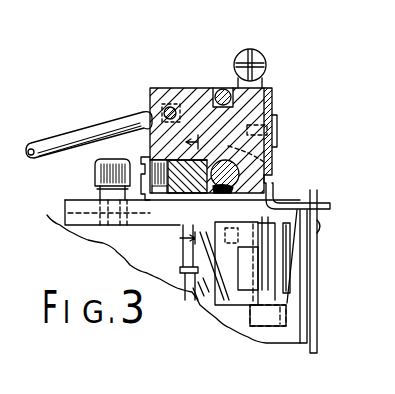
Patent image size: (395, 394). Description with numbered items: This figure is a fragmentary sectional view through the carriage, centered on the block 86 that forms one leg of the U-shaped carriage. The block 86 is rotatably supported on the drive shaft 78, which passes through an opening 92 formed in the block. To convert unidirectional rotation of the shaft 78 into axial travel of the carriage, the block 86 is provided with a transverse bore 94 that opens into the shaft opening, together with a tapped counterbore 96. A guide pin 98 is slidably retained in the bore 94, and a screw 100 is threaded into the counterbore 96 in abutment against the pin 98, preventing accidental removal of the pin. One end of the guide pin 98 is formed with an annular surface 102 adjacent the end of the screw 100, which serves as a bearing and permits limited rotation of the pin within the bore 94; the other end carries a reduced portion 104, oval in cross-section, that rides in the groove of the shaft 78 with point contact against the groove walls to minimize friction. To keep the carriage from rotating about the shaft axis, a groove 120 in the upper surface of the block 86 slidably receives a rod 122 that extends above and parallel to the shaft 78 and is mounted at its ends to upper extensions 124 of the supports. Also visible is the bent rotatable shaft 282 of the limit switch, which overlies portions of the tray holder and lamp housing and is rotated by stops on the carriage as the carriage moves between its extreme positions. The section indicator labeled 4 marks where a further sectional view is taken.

The block 86 is at (157, 91).
The groove 120 is at (218, 88).
The rod 122 is at (222, 88).
The upper extension 124 is at (178, 106).
The rotatable shaft 282 is at (47, 146).
The transverse bore 94 is at (150, 149).
The screw 100 is at (138, 152).
The tapped counterbore 96 is at (113, 194).
The reduced portion 104 is at (212, 198).
The section line 4 is at (188, 190).
The drive shaft 78 is at (270, 169).
The opening 92 is at (268, 163).
The annular surface 102 is at (126, 231).
The guide pin 98 is at (166, 201).